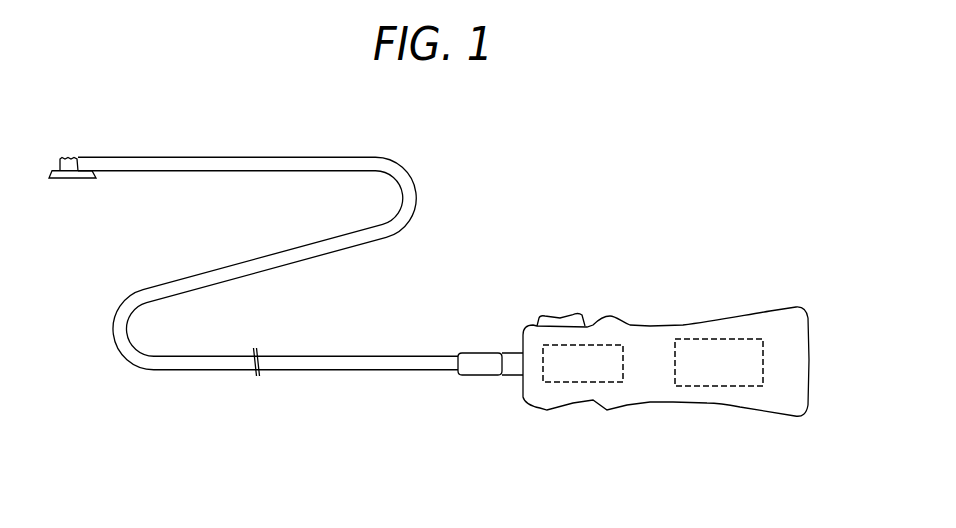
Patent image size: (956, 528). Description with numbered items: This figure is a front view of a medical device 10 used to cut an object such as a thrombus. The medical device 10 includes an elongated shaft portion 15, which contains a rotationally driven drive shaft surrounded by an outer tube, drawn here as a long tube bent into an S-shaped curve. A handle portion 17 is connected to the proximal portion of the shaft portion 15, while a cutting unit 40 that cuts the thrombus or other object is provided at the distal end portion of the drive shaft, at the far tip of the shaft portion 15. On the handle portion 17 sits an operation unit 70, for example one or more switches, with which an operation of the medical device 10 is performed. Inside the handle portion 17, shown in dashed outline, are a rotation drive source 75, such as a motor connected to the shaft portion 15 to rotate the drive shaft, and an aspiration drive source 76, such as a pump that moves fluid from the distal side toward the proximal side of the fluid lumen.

The medical device 10 is at (640, 359).
The shaft portion 15 is at (417, 189).
The handle portion 17 is at (677, 401).
The cutting unit 40 is at (67, 159).
The operation unit 70 is at (573, 316).
The rotation drive source 75 is at (573, 386).
The aspiration drive source 76 is at (727, 386).